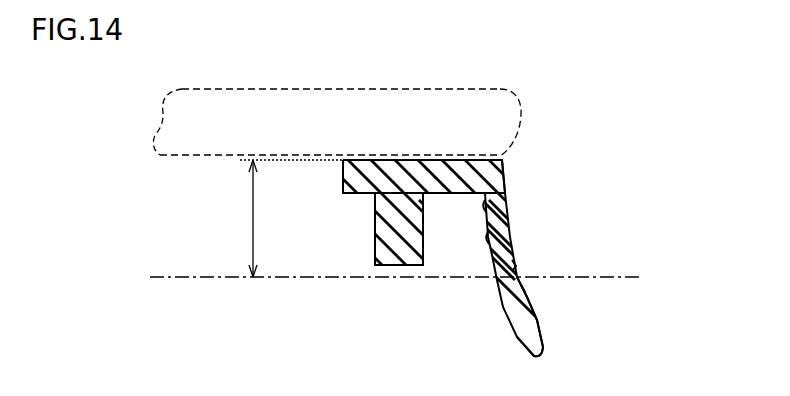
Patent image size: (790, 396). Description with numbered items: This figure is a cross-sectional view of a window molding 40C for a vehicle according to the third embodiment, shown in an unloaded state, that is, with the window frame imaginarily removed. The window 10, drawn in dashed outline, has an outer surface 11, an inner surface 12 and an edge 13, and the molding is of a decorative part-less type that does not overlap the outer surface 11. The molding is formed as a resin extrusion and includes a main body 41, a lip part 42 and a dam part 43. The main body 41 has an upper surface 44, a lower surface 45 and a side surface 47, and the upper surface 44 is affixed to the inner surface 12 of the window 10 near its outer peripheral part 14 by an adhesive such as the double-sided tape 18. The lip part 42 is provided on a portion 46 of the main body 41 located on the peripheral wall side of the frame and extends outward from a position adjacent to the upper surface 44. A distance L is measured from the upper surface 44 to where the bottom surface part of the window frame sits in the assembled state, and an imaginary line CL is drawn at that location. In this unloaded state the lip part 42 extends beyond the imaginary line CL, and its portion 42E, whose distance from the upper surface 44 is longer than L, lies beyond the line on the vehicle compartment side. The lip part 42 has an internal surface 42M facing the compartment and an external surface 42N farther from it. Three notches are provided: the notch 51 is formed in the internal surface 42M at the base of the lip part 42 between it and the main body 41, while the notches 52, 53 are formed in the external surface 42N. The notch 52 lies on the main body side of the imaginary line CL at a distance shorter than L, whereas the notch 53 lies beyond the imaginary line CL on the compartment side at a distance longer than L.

The window 10 is at (316, 107).
The outer surface 11 is at (182, 89).
The inner surface 12 is at (182, 155).
The edge 13 is at (519, 118).
The outer peripheral part 14 is at (458, 158).
The double-sided tape 18 is at (458, 197).
The window molding 40C is at (439, 212).
The main body 41 is at (467, 185).
The lip part 42 is at (547, 288).
The internal surface 42M is at (486, 232).
The external surface 42N is at (536, 315).
The portion 42E is at (511, 333).
The dam part 43 is at (400, 230).
The upper surface 44 is at (385, 158).
The lower surface 45 is at (422, 192).
The portion 46 is at (493, 178).
The side surface 47 is at (343, 182).
The notch 51 is at (484, 197).
The notch 52 is at (521, 269).
The notch 53 is at (523, 288).
The distance L is at (253, 219).
The imaginary line CL is at (605, 277).